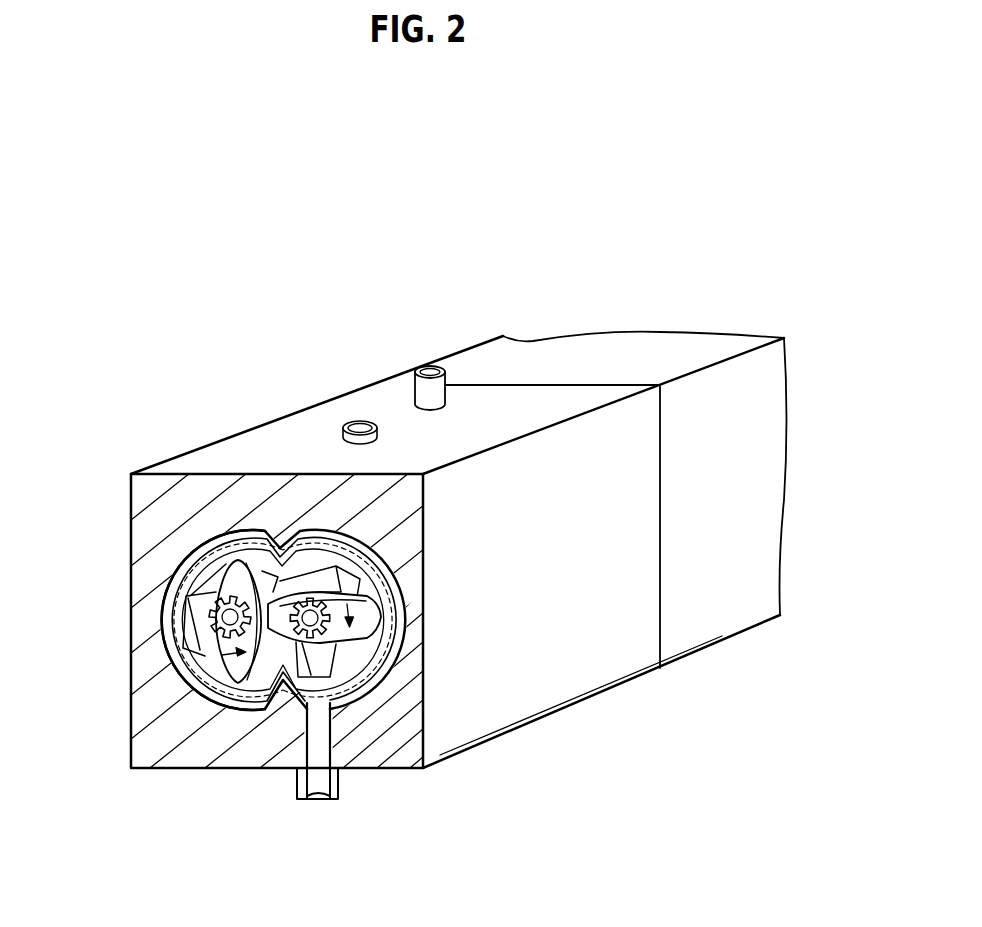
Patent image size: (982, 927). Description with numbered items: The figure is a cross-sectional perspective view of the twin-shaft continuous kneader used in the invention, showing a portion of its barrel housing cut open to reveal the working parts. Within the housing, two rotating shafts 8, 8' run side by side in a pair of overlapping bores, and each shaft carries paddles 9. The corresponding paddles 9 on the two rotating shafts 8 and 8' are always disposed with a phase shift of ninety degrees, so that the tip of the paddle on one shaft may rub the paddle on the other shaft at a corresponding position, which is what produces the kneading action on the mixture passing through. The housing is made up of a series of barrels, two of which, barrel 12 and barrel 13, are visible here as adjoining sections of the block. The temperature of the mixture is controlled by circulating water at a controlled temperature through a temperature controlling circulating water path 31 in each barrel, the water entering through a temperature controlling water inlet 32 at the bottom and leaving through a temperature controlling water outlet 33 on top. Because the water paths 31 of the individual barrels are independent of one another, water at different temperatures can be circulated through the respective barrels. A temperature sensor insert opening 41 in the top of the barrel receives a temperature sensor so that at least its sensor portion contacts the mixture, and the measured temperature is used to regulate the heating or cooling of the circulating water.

The rotating shaft 8 is at (284, 675).
The rotating shaft 8' is at (170, 633).
The paddles 9 is at (218, 665).
The barrel 12 is at (613, 678).
The barrel 13 is at (717, 630).
The temperature controlling circulating water path 31 is at (297, 693).
The temperature controlling water inlet 32 is at (317, 788).
The temperature controlling water outlet 33 is at (437, 366).
The temperature sensor insert opening 41 is at (358, 418).